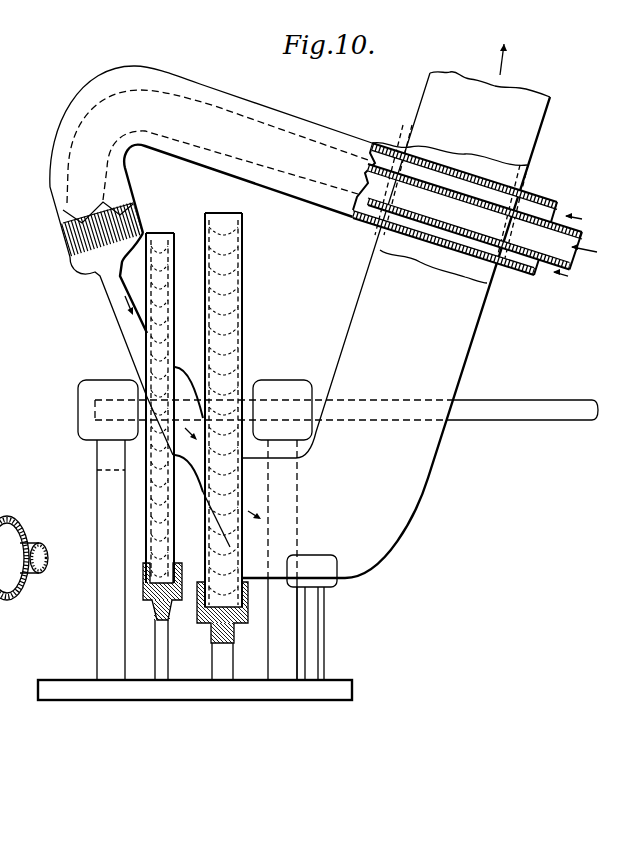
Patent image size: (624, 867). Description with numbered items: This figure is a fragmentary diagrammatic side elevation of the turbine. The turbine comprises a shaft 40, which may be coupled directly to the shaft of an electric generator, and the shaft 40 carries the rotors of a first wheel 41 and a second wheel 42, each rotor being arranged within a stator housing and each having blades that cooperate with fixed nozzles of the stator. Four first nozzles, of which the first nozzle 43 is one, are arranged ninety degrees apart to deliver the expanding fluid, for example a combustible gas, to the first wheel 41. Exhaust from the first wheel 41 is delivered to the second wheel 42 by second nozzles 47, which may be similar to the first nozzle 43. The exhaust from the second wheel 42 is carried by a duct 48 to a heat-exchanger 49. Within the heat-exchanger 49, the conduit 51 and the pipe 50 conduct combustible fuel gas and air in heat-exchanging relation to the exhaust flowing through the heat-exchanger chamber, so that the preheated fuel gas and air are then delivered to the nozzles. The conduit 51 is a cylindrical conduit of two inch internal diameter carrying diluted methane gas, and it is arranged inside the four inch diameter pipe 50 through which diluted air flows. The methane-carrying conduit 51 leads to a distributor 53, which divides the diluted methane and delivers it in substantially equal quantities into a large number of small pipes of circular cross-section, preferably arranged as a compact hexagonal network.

The shaft 40 is at (507, 405).
The first wheel 41 is at (161, 232).
The second wheel 42 is at (247, 244).
The first nozzle 43 is at (136, 338).
The second nozzle 47 is at (184, 378).
The duct 48 is at (414, 472).
The heat-exchanger 49 is at (546, 193).
The pipe 50 is at (376, 142).
The conduit 51 is at (406, 124).
The distributor 53 is at (73, 262).